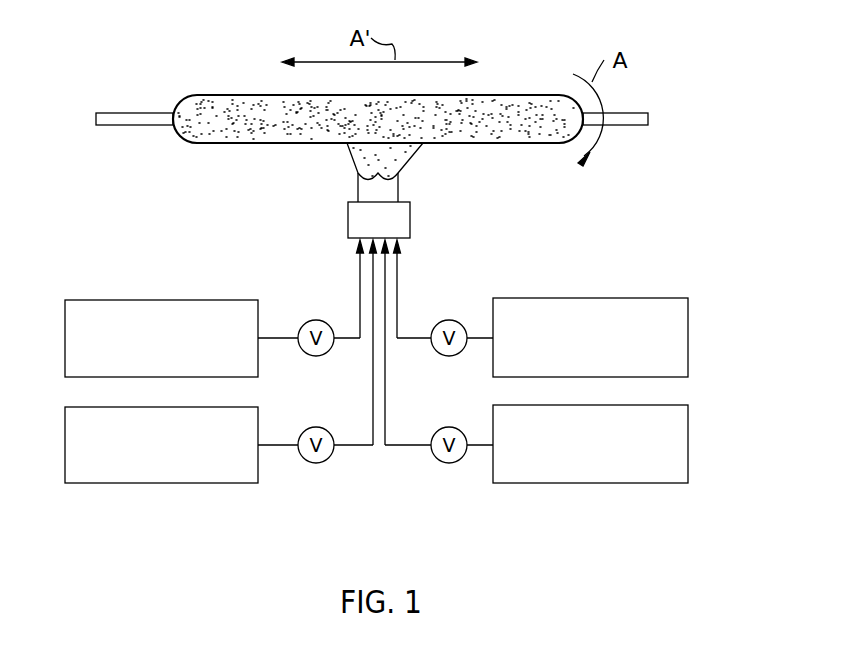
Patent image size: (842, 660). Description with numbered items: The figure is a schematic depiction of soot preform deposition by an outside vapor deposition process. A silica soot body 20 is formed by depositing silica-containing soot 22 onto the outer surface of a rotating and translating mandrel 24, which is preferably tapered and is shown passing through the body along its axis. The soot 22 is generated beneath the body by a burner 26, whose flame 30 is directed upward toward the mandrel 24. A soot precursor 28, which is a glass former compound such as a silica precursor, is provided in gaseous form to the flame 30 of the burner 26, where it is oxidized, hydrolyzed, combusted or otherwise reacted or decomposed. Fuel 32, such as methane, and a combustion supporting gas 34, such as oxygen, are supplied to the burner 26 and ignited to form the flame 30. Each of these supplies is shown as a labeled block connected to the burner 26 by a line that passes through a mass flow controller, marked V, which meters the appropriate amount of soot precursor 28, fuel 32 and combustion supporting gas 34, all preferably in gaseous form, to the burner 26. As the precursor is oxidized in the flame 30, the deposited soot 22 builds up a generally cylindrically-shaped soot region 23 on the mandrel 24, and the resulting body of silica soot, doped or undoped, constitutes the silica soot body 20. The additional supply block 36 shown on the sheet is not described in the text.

The silica soot body 20 is at (502, 93).
The silica-containing soot 22 is at (405, 154).
The soot region 23 is at (218, 94).
The mandrel 24 is at (141, 112).
The burner 26 is at (410, 221).
The soot precursor 28 is at (665, 298).
The flame 30 is at (357, 190).
The fuel 32 is at (80, 300).
The combustion supporting gas 34 is at (80, 407).
The dopant compound supply 36 is at (663, 405).